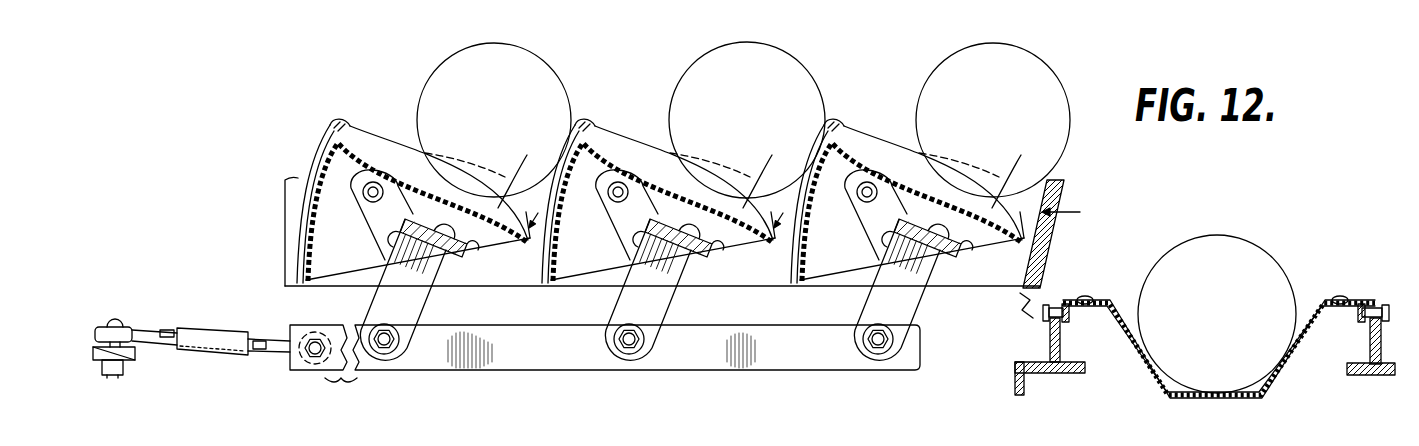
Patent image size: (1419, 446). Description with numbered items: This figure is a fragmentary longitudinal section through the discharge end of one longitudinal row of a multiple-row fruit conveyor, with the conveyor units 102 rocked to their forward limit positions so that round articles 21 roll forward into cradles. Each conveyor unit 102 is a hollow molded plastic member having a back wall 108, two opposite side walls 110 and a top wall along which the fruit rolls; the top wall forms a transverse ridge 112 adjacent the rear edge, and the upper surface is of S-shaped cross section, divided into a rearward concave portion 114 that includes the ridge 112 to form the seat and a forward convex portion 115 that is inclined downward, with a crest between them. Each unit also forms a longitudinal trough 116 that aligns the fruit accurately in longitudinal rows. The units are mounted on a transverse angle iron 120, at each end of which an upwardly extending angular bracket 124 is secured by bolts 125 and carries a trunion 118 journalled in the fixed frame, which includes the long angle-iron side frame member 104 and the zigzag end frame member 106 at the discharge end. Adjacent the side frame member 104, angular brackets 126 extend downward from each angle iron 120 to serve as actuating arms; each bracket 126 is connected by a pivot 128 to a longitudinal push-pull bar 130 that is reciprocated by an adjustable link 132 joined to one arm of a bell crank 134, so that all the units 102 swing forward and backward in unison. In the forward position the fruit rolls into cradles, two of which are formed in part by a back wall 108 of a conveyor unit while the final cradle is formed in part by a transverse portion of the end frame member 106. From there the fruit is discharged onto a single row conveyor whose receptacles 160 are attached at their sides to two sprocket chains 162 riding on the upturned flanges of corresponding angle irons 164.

The ball 21 is at (533, 63).
The conveyor unit 102 is at (285, 256).
The side frame member 104 is at (296, 178).
The end frame member 106 is at (1066, 181).
The back wall 108 is at (312, 224).
The side wall 110 is at (333, 258).
The transverse ridge 112 is at (330, 124).
The rearward concave portion 114 is at (367, 146).
The forward convex portion 115 is at (527, 180).
The longitudinal trough 116 is at (490, 200).
The trunion 118 is at (370, 202).
The transverse angle iron 120 is at (466, 256).
The angular bracket 124 is at (412, 207).
The bolt 125 is at (412, 258).
The angular bracket 126 is at (376, 303).
The pivot 128 is at (637, 348).
The push-pull bar 130 is at (590, 356).
The adjustable link 132 is at (207, 331).
The bell crank 134 is at (135, 352).
The receptacle 160 is at (1160, 385).
The sprocket chain 162 is at (1060, 304).
The angle iron 164 is at (1062, 340).